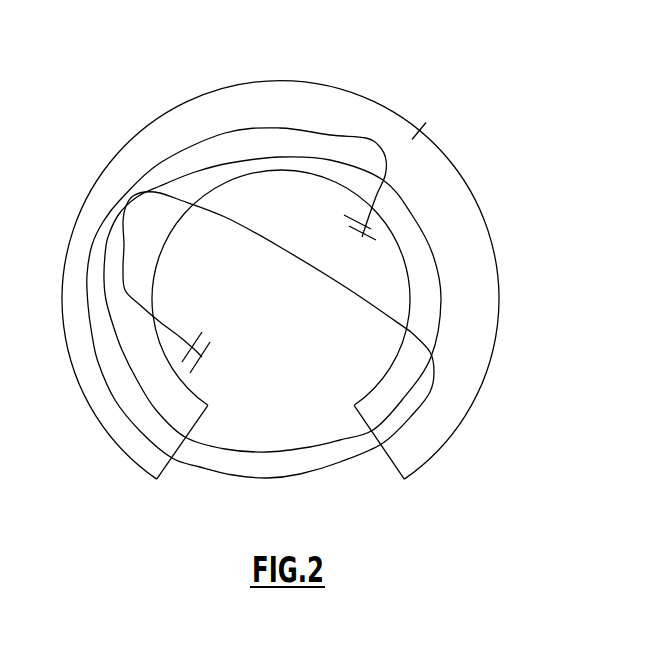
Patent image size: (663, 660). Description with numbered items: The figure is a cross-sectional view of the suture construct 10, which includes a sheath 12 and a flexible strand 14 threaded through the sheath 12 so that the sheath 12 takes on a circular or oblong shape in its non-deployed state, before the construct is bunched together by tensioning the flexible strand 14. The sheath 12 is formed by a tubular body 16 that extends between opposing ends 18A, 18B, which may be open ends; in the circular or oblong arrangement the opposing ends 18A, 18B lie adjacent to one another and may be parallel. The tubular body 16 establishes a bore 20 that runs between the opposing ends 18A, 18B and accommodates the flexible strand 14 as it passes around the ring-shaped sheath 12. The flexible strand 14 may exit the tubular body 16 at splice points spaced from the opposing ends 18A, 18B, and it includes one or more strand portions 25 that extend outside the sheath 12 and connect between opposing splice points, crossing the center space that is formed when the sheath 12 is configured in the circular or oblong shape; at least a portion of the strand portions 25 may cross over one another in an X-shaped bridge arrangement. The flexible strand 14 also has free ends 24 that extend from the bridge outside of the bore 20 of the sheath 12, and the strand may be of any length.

The suture construct 10 is at (485, 138).
The sheath 12 is at (507, 261).
The flexible strand 14 is at (168, 112).
The tubular body 16 is at (482, 212).
The opposing end 18A is at (162, 476).
The opposing end 18B is at (392, 466).
The bore 20 is at (426, 127).
The free ends 24 is at (362, 238).
The strand portions 25 is at (308, 263).